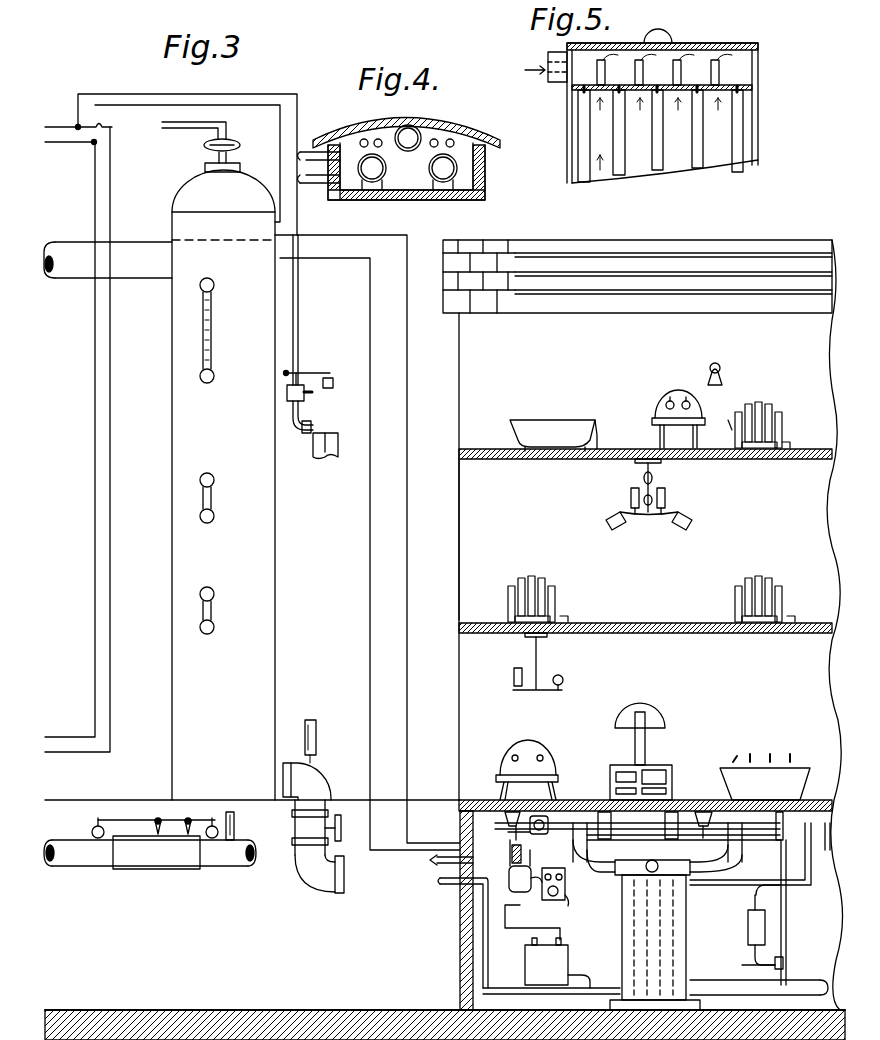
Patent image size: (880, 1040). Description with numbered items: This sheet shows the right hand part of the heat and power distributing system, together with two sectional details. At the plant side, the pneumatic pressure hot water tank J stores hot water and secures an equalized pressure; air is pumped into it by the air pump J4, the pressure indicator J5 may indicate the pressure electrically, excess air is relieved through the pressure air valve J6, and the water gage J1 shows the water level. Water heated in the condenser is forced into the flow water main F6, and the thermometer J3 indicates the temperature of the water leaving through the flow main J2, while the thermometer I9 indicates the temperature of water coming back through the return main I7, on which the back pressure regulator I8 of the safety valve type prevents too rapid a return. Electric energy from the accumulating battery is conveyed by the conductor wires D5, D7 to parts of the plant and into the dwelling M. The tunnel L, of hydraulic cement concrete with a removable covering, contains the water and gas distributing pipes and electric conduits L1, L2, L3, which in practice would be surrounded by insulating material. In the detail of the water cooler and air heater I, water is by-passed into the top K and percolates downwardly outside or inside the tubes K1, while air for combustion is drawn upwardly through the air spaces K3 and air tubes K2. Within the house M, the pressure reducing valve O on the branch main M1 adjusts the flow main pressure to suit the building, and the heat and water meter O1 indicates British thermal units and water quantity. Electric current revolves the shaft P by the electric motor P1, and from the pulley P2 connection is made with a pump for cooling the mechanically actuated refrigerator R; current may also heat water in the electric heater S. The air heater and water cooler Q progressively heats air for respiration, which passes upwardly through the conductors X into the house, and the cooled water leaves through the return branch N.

In FIG. 3, the conductor wire D5 is at (62, 135).
In FIG. 3, the conductor wire D7 is at (94, 635).
In FIG. 3, the flow water main F6 is at (75, 266).
In FIG. 3, the pneumatic pressure hot water tank J is at (223, 476).
In FIG. 3, the water gage J1 is at (214, 327).
In FIG. 3, the flow main J2 is at (322, 770).
In FIG. 3, the thermometer J3 is at (316, 718).
In FIG. 3, the air pump J4 is at (322, 458).
In FIG. 3, the pressure indicator J5 is at (226, 144).
In FIG. 3, the pressure air valve J6 is at (312, 368).
In FIG. 3, the dwelling M is at (459, 520).
In FIG. 3, the branch main M1 is at (437, 862).
In FIG. 3, the return branch N is at (447, 882).
In FIG. 3, the pressure reducing valve O is at (512, 880).
In FIG. 3, the heat and water meter O1 is at (588, 904).
In FIG. 3, the shaft P is at (680, 822).
In FIG. 3, the electric motor P1 is at (545, 822).
In FIG. 3, the pulley P2 is at (762, 820).
In FIG. 3, the conductors X is at (647, 784).
In FIG. 3, the air heater and water cooler Q is at (624, 960).
In FIG. 3, the mechanically actuated refrigerator R is at (735, 945).
In FIG. 3, the electric heater S is at (530, 960).
In FIG. 3, the return main I7 is at (72, 852).
In FIG. 3, the back pressure regulator I8 is at (163, 834).
In FIG. 3, the thermometer I9 is at (231, 842).
In FIG. 4, the tunnel L is at (484, 162).
In FIG. 4, the distributing pipe or conduit L1 is at (447, 173).
In FIG. 4, the distributing pipe or conduit L2 is at (412, 130).
In FIG. 4, the distributing pipe or conduit L3 is at (455, 140).
In FIG. 5, the water cooler and air heater I is at (567, 125).
In FIG. 5, the top K is at (748, 68).
In FIG. 5, the tubes K1 is at (748, 120).
In FIG. 5, the air tubes K2 is at (682, 66).
In FIG. 5, the air spaces K3 is at (677, 160).